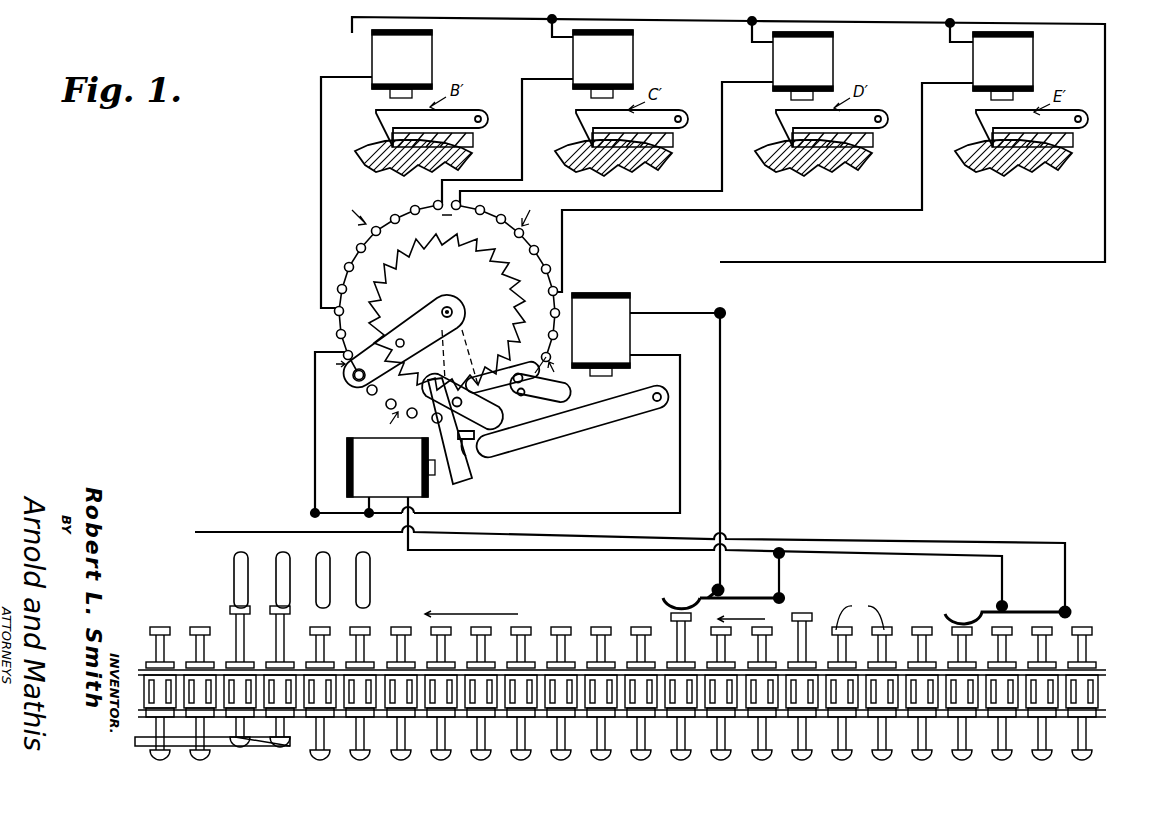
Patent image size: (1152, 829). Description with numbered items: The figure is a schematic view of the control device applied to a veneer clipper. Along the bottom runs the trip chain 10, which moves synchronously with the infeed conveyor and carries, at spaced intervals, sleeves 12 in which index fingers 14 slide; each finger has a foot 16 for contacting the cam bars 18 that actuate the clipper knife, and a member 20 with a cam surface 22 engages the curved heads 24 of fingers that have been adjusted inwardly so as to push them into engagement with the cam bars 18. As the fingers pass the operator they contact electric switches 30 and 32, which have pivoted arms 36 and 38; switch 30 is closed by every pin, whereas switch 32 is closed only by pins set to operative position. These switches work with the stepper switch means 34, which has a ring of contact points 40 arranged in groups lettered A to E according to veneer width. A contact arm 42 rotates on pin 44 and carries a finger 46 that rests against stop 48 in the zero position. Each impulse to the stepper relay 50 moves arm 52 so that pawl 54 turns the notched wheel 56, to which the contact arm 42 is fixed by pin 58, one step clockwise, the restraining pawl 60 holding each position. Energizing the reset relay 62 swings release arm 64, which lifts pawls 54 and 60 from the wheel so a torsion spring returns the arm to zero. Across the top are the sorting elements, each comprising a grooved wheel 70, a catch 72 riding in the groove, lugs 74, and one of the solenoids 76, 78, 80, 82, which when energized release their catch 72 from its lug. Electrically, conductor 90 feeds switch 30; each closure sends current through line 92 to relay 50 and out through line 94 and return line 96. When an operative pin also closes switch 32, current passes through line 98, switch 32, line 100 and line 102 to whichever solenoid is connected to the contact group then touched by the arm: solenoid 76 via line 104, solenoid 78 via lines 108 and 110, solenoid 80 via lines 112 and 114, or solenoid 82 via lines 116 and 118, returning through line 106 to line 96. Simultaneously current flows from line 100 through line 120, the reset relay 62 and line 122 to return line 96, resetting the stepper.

The trip chain 10 is at (639, 692).
The sleeves 12 is at (848, 668).
The index fingers 14 is at (846, 648).
The feet 16 is at (860, 615).
The cam bars 18 is at (246, 580).
The member 20 is at (140, 746).
The cam surface 22 is at (272, 745).
The heads 24 is at (882, 760).
The switch 30 is at (992, 604).
The switch 32 is at (707, 590).
The stepper switch means 34 is at (311, 329).
The arm 36 is at (986, 618).
The arm 38 is at (664, 600).
The contact points 40 is at (541, 356).
The contact arm 42 is at (447, 312).
The pin 44 is at (455, 312).
The finger 46 is at (350, 380).
The stop 48 is at (470, 450).
The stepper relay 50 is at (347, 472).
The arm 52 is at (470, 478).
The pawl 54 is at (470, 402).
The notched wheel 56 is at (443, 217).
The pin 58 is at (404, 341).
The restraining pawl 60 is at (518, 385).
The reset relay 62 is at (598, 300).
The release arm 64 is at (560, 420).
The grooved wheel 70 is at (456, 160).
The catch 72 is at (382, 118).
The lugs 74 is at (452, 136).
The solenoid 76 is at (372, 55).
The solenoid 78 is at (573, 60).
The solenoid 80 is at (773, 62).
The solenoid 82 is at (1025, 62).
The electrical conductor 90 is at (214, 534).
The line 92 is at (418, 516).
The line 94 is at (366, 504).
The return line 96 is at (262, 510).
The line 98 is at (777, 574).
The line 100 is at (721, 468).
The line 102 is at (706, 26).
The line 104 is at (321, 154).
The line 106 is at (388, 330).
The line 108 is at (552, 30).
The line 110 is at (522, 162).
The line 112 is at (752, 34).
The line 114 is at (722, 190).
The line 116 is at (950, 34).
The line 118 is at (792, 212).
The line 120 is at (678, 312).
The line 122 is at (680, 452).